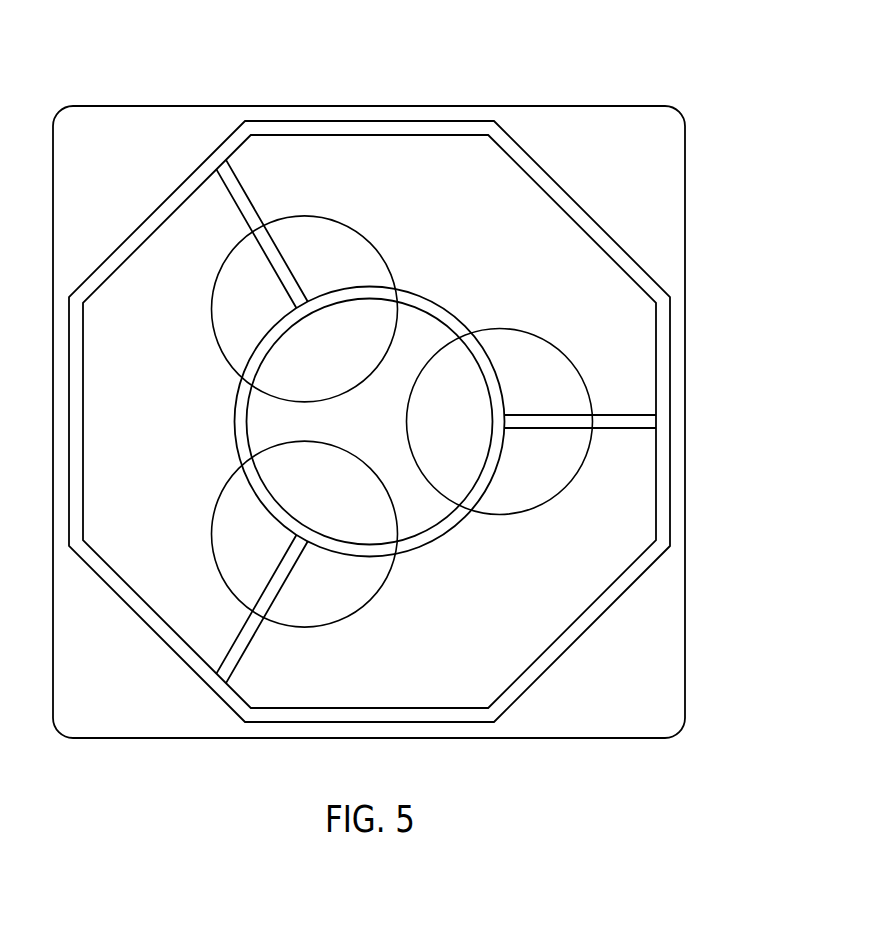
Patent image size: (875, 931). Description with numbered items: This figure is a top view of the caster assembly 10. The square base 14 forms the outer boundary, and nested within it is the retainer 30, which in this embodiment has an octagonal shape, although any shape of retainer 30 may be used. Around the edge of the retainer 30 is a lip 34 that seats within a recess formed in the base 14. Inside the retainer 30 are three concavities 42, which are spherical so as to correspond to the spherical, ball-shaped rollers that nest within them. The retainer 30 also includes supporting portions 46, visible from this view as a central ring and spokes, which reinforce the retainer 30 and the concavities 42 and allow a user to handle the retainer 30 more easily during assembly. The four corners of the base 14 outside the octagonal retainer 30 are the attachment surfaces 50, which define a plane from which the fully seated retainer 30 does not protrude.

The caster assembly 10 is at (782, 121).
The base 14 is at (686, 580).
The retainer 30 is at (378, 162).
The lip 34 is at (527, 165).
The concavities 42 is at (337, 477).
The supporting portions 46 is at (455, 528).
The attachment surfaces 50 is at (136, 175).